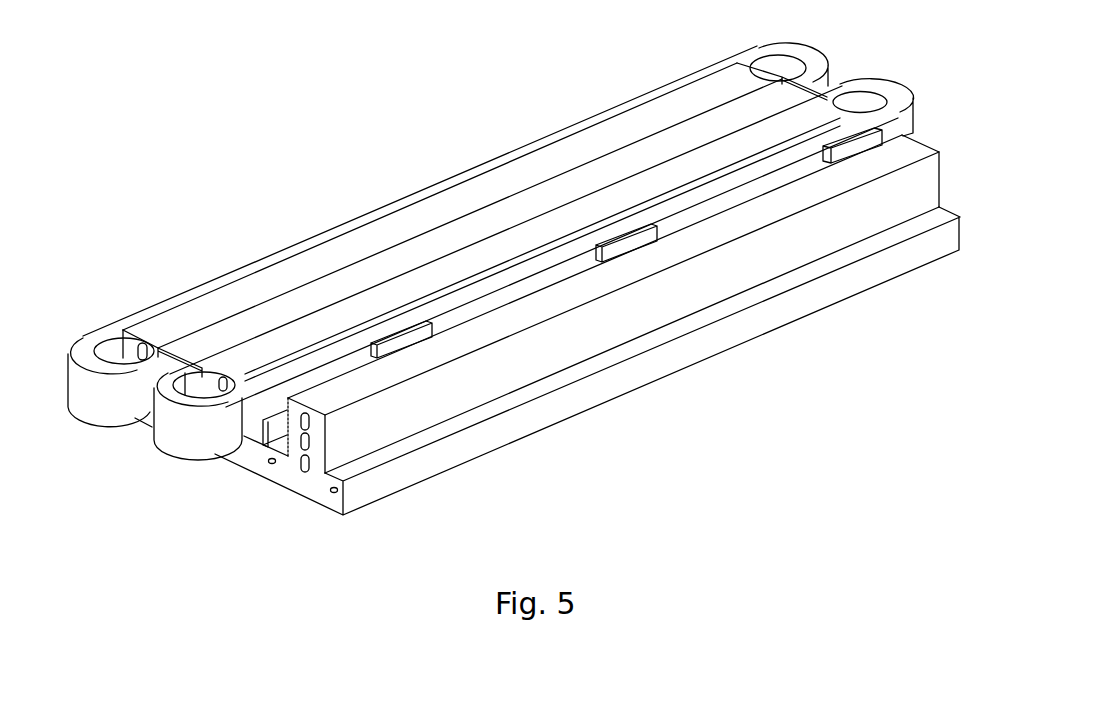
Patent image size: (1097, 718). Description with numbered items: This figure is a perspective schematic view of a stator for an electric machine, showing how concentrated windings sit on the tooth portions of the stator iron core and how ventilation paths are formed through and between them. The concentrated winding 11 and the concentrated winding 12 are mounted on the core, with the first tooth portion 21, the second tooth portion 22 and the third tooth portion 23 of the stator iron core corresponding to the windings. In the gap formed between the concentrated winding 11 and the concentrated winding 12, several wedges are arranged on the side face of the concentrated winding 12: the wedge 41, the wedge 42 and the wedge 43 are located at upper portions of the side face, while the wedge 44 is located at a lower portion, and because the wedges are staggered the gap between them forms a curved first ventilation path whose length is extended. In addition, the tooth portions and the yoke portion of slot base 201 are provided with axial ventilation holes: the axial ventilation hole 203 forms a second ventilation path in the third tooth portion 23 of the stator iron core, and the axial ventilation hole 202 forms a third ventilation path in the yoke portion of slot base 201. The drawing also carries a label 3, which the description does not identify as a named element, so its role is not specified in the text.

The concentrated winding 11 is at (98, 337).
The concentrated winding 12 is at (175, 425).
The first tooth portion 21 is at (188, 315).
The second tooth portion 22 is at (353, 317).
The connecting plate 3 is at (262, 323).
The third tooth portion 23 is at (322, 440).
The wedge 41 is at (418, 325).
The wedge 42 is at (618, 240).
The wedge 43 is at (832, 148).
The wedge 44 is at (265, 442).
The yoke portion of slot base 201 is at (272, 465).
The axial ventilation hole 202 is at (336, 493).
The axial ventilation hole 203 is at (304, 472).